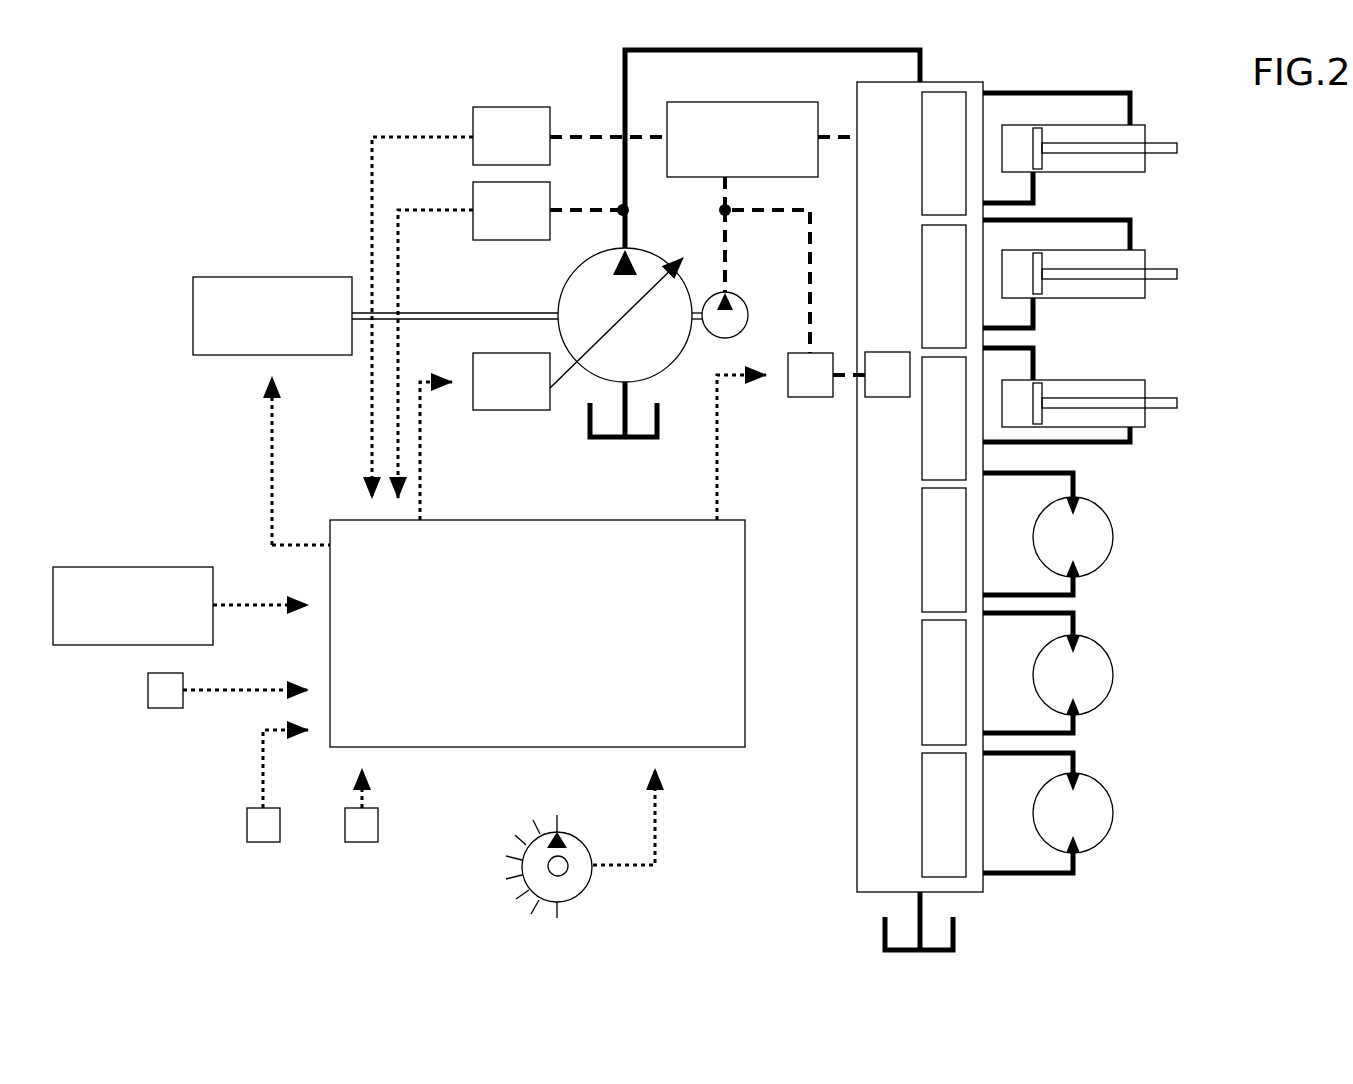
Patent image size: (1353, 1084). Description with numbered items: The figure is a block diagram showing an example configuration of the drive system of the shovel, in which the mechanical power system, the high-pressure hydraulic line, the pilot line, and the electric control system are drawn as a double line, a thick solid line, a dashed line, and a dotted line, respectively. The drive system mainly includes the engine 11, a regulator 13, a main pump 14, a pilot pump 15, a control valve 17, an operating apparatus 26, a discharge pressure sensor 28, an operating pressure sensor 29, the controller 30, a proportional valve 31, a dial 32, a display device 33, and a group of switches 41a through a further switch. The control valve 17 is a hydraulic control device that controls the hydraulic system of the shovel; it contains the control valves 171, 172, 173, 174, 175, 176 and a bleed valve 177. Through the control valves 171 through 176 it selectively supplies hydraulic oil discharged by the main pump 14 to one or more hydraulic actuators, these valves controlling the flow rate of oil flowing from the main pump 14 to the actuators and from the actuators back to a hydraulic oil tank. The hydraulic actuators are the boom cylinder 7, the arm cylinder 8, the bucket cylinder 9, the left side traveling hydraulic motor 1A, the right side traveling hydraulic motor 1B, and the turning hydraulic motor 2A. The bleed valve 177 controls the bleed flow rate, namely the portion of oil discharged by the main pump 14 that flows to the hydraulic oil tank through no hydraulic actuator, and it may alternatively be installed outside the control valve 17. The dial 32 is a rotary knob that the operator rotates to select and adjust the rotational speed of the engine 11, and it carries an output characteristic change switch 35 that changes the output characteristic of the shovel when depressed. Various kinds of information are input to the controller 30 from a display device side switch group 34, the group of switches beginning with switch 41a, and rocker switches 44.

The left side traveling hydraulic motor 1A is at (1100, 508).
The right side traveling hydraulic motor 1B is at (1100, 646).
The turning hydraulic motor 2A is at (1100, 786).
The boom cylinder 7 is at (1145, 130).
The arm cylinder 8 is at (1145, 257).
The bucket cylinder 9 is at (1145, 422).
The engine 11 is at (298, 277).
The regulator 13 is at (515, 410).
The main pump 14 is at (660, 365).
The pilot pump 15 is at (737, 294).
The control valve 17 is at (928, 501).
The control valve 171 is at (922, 800).
The control valve 172 is at (922, 668).
The control valve 173 is at (922, 535).
The control valve 174 is at (922, 418).
The control valve 175 is at (922, 137).
The control valve 176 is at (922, 272).
The bleed valve 177 is at (887, 352).
The operating apparatus 26 is at (780, 102).
The discharge pressure sensor 28 is at (473, 195).
The operating pressure sensor 29 is at (473, 120).
The controller 30 is at (605, 520).
The proportional valve 31 is at (800, 397).
The dial 32 is at (588, 884).
The display device 33 is at (143, 567).
The display device side switch group 34 is at (148, 690).
The output characteristic change switch 35 is at (550, 870).
The switch 41a is at (362, 842).
The rocker switch 44 is at (265, 842).